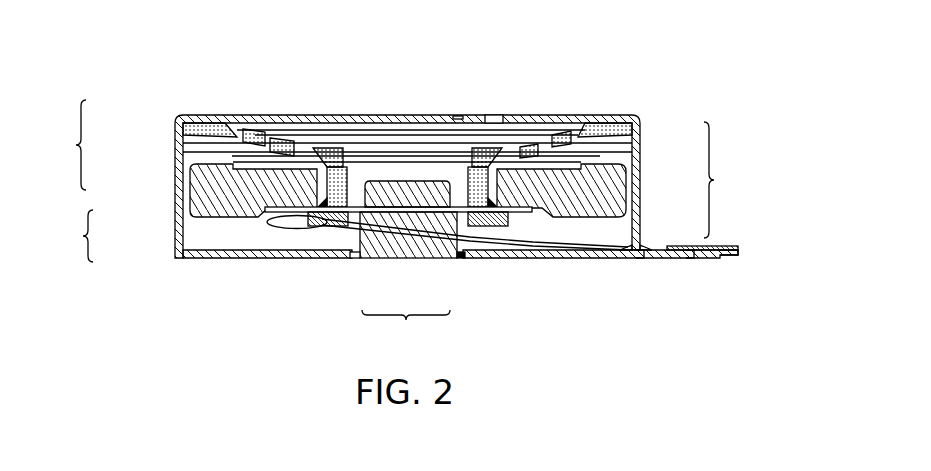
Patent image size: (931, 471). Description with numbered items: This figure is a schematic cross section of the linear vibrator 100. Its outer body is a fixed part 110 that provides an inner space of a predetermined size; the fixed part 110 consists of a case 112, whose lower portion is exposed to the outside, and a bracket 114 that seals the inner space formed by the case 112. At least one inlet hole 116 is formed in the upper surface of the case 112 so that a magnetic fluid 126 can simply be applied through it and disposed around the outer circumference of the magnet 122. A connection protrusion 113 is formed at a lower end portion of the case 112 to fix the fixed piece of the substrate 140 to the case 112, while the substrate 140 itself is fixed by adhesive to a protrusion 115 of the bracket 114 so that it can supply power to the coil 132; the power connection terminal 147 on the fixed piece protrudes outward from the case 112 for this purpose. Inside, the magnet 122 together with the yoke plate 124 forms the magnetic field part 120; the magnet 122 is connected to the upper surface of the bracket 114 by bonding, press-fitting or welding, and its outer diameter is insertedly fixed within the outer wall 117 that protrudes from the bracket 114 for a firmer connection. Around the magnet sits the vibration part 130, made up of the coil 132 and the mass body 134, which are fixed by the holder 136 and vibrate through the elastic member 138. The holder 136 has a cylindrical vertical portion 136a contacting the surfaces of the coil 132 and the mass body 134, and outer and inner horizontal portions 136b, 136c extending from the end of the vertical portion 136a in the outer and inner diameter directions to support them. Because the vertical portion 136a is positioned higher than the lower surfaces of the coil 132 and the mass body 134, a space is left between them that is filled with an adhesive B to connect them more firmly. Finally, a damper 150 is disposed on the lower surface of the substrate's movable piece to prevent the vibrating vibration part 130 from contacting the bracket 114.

The linear vibrator 100 is at (209, 25).
The fixed part 110 is at (391, 190).
The case 112 is at (178, 226).
The bracket 114 is at (181, 259).
The connection protrusion 113 is at (640, 259).
The protrusion 115 is at (690, 259).
The inlet hole 116 is at (492, 115).
The outer wall 117 is at (345, 259).
The magnetic field part 120 is at (408, 263).
The magnet 122 is at (431, 234).
The yoke plate 124 is at (388, 196).
The magnetic fluid 126 is at (459, 258).
The vibration part 130 is at (397, 167).
The coil 132 is at (515, 157).
The mass body 134 is at (602, 217).
The holder 136 is at (369, 151).
The vertical portion 136a is at (320, 203).
The outer horizontal portion 136b is at (300, 156).
The inner horizontal portion 136c is at (330, 160).
The elastic member 138 is at (600, 130).
The substrate 140 is at (747, 239).
The power connection terminal 147 is at (718, 246).
The damper 150 is at (497, 228).
The adhesive B is at (335, 232).